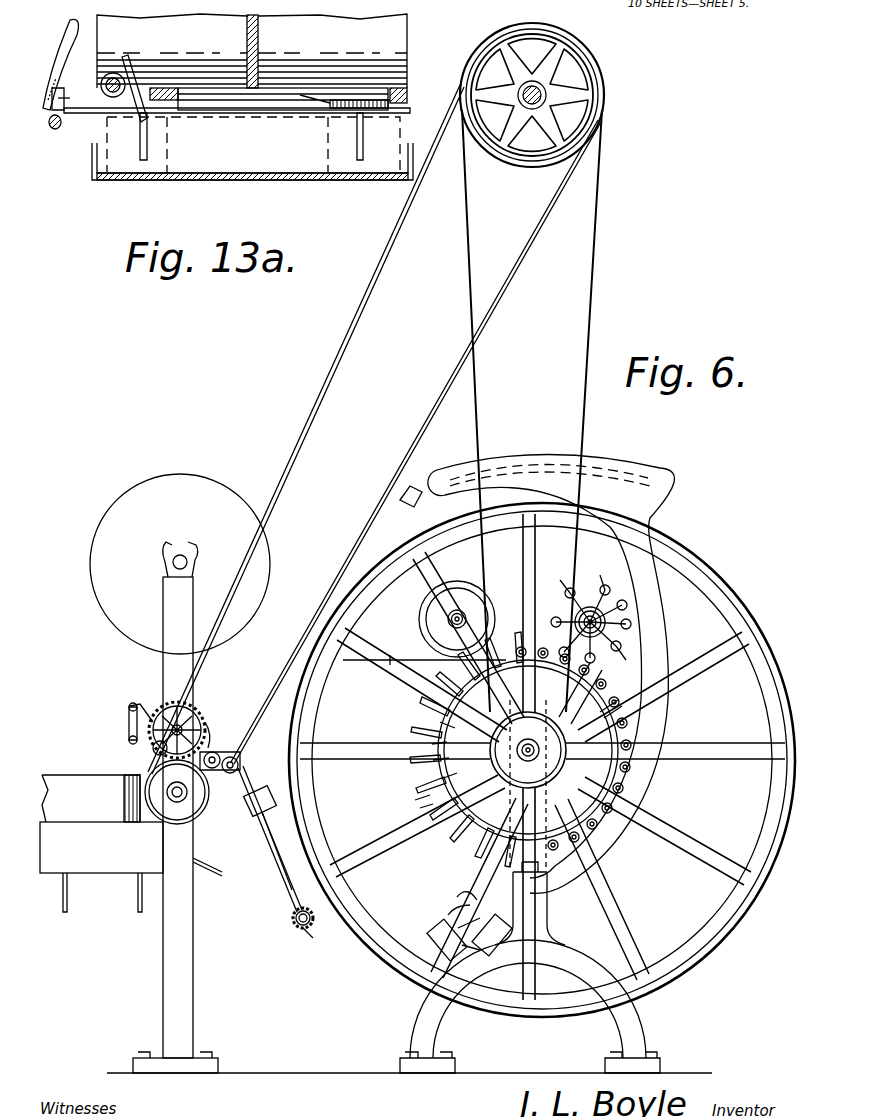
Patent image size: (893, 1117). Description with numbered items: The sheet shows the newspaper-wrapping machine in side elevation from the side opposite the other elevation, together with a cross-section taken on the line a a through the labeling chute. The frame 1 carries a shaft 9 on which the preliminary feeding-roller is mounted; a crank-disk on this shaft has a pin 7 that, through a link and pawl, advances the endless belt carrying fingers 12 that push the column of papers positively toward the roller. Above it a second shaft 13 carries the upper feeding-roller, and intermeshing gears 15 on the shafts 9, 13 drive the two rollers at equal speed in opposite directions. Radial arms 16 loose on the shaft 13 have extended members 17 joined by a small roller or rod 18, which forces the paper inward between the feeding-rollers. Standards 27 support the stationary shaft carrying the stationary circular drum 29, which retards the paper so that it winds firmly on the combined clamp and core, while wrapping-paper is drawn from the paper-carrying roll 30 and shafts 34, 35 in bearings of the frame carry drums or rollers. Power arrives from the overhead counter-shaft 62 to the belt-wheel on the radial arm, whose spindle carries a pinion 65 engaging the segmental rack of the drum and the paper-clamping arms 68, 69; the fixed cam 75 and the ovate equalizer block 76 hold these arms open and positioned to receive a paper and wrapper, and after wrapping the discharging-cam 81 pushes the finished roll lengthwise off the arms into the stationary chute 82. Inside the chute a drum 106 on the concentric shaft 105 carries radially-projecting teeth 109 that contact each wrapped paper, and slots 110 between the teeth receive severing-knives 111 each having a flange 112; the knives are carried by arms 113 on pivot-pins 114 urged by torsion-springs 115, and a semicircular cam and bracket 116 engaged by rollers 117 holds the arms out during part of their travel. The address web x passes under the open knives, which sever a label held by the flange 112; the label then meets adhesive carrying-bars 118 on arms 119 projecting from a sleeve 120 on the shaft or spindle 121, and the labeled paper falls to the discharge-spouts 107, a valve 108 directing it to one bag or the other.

In FIG. 6, the frame 1 is at (163, 958).
In FIG. 6, the pin 7 is at (101, 824).
In FIG. 6, the shaft 9 is at (177, 792).
In FIG. 6, the fingers 12 is at (66, 884).
In FIG. 6, the second shaft 13 is at (150, 742).
In FIG. 6, the intermeshing gears 15 is at (190, 710).
In FIG. 6, the radial arms 16 is at (130, 702).
In FIG. 6, the extended member 17 is at (128, 718).
In FIG. 6, the small roller or rod 18 is at (128, 735).
In FIG. 6, the standards 27 is at (620, 1040).
In FIG. 6, the stationary circular drum 29 is at (284, 712).
In FIG. 6, the paper-carrying roll 30 is at (180, 564).
In FIG. 6, the shaft 34 is at (240, 768).
In FIG. 6, the shaft 35 is at (210, 740).
In FIG. 6, the overhead counter-shaft 62 is at (542, 103).
In FIG. 6, the pinion 65 is at (292, 918).
In FIG. 6, the paper-clamping arm 68 is at (312, 936).
In FIG. 6, the paper-clamping arm 69 is at (296, 926).
In FIG. 6, the fixed cam 75 is at (274, 850).
In FIG. 6, the cam or equalizer 76 is at (255, 815).
In FIG. 6, the discharging-cam 81 is at (415, 500).
In FIG. 13a, the stationary chute 82 is at (200, 182).
In FIG. 6, the stationary chute 82 is at (636, 470).
In FIG. 6, the shaft 105 is at (540, 750).
In FIG. 13a, the drum 106 is at (210, 42).
In FIG. 6, the drum 106 is at (620, 770).
In FIG. 6, the discharge-spouts 107 is at (440, 930).
In FIG. 6, the valve 108 is at (425, 985).
In FIG. 6, the radially-projecting teeth 109 is at (445, 714).
In FIG. 13a, the slots 110 is at (323, 92).
In FIG. 13a, the severing-knives 111 is at (278, 103).
In FIG. 6, the flange 112 is at (470, 790).
In FIG. 13a, the arms 113 is at (98, 116).
In FIG. 6, the arms 113 is at (625, 705).
In FIG. 13a, the pivot-pins 114 is at (100, 80).
In FIG. 13a, the torsion-spring 115 is at (150, 112).
In FIG. 13a, the semicircular cam and bracket 116 is at (46, 40).
In FIG. 6, the semicircular cam and bracket 116 is at (440, 776).
In FIG. 13a, the rollers 117 is at (40, 112).
In FIG. 6, the rollers 117 is at (510, 715).
In FIG. 6, the adhesive carrying-bars 118 is at (584, 578).
In FIG. 6, the arms 119 is at (600, 583).
In FIG. 6, the sleeve 120 is at (608, 618).
In FIG. 6, the shaft or spindle 121 is at (644, 640).
In FIG. 6, the section line a is at (535, 815).
In FIG. 6, the continuous web x is at (424, 650).